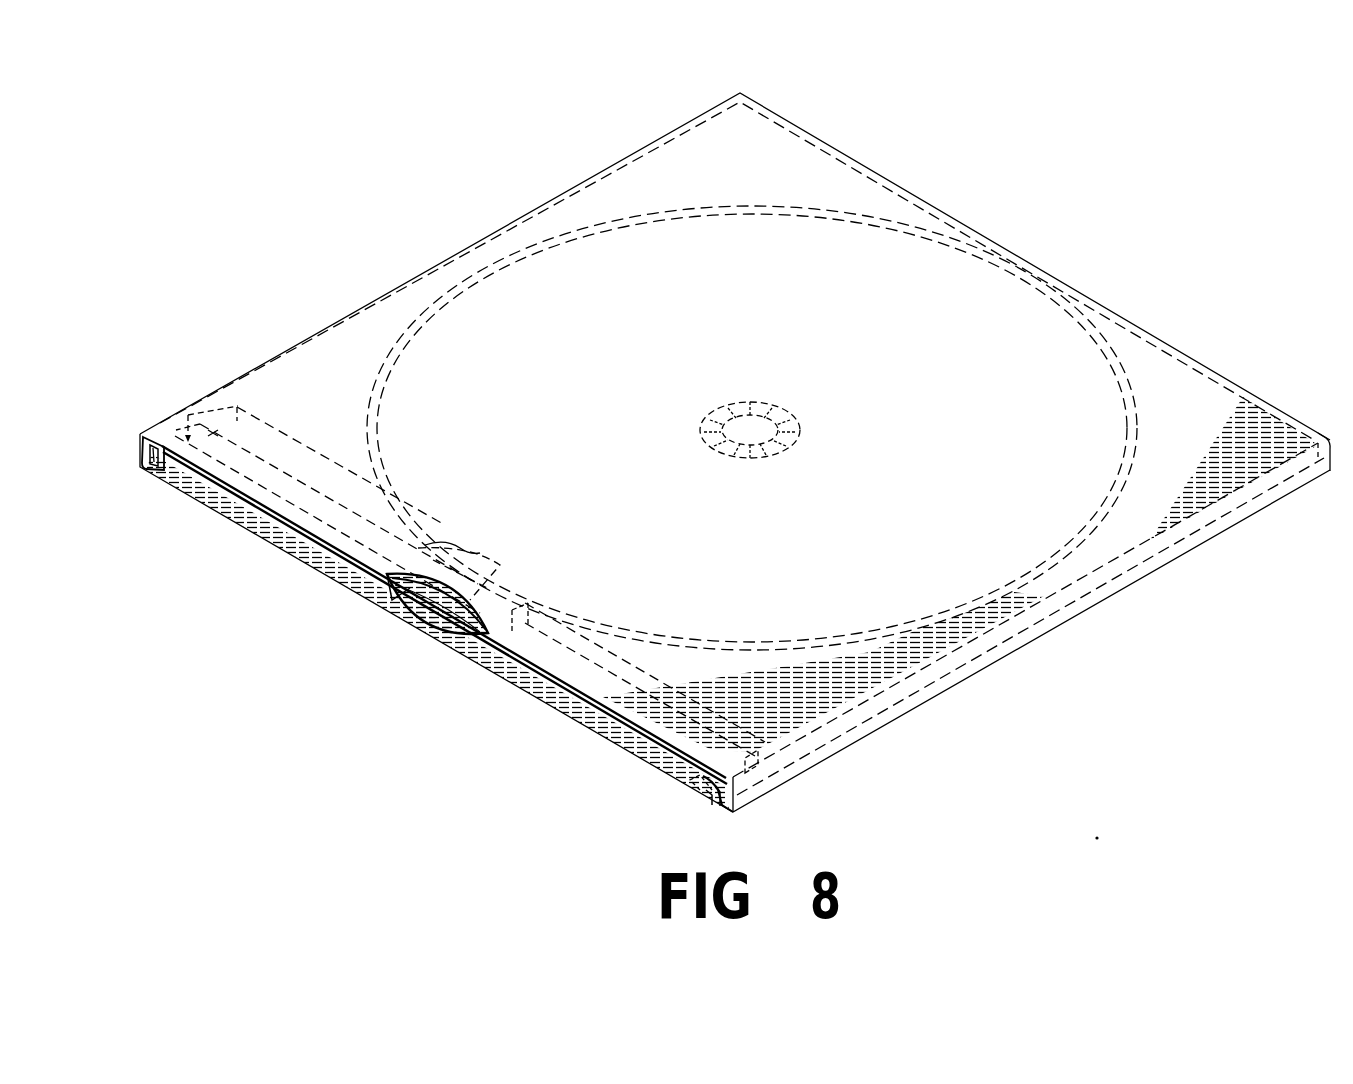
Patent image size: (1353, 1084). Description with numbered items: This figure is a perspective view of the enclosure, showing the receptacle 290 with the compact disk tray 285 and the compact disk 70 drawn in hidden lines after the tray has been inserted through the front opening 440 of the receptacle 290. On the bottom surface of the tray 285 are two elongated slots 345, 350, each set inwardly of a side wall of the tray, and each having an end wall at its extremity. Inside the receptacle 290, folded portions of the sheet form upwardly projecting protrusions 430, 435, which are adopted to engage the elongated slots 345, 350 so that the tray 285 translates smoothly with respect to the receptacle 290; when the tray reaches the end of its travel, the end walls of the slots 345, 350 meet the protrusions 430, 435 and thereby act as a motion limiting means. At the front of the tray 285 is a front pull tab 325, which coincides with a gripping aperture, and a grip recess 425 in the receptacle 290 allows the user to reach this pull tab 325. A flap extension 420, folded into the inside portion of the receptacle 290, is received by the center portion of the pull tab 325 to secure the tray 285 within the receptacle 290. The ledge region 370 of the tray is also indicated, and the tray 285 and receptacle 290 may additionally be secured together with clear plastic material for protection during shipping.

The receptacle 290 is at (789, 106).
The compact disk tray 285 is at (880, 197).
The disc 70 is at (1000, 292).
The ledge 370 is at (637, 197).
The elongated slot 345 is at (185, 438).
The elongated slot 350 is at (750, 802).
The protrusion 430 is at (178, 462).
The protrusion 435 is at (700, 771).
The front opening 440 is at (272, 532).
The flap extension 420 is at (497, 570).
The grip recess 425 is at (392, 600).
The front pull tab 325 is at (462, 647).